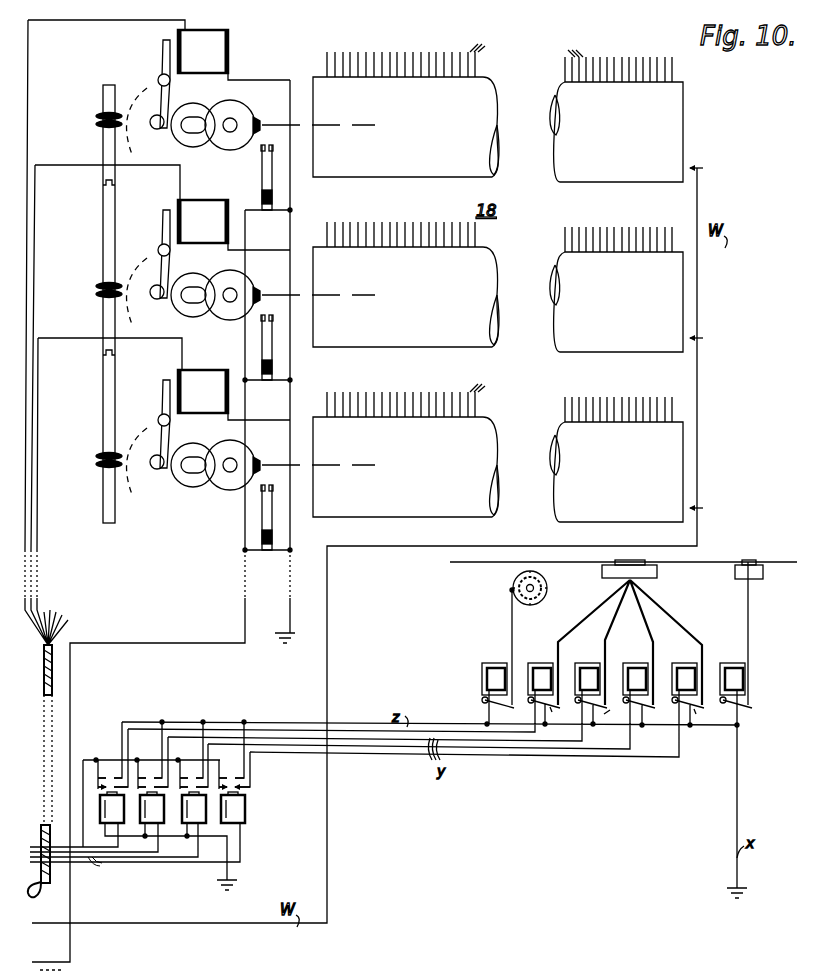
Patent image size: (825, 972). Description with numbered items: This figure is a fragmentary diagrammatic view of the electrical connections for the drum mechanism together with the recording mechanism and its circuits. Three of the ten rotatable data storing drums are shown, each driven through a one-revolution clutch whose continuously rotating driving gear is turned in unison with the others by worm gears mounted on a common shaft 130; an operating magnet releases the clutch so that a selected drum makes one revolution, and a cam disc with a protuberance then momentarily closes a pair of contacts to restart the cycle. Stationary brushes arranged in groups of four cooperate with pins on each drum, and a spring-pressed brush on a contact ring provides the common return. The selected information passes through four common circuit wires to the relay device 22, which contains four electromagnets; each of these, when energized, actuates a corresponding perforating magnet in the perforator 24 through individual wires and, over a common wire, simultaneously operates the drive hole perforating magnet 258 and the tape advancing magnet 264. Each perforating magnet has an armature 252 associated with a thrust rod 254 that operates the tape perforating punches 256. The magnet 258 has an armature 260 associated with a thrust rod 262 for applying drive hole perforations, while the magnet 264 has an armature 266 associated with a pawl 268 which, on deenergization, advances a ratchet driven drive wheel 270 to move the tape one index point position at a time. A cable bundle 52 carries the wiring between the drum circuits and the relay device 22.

The relay device 22 is at (155, 808).
The perforator 24 is at (610, 717).
The cable bundle 52 is at (39, 870).
The shaft 130 is at (104, 208).
The armature 252 is at (632, 715).
The thrust rod 254 is at (600, 632).
The tape perforating punches 256 is at (610, 565).
The drive hole perforating magnet 258 is at (745, 678).
The armature 260 is at (742, 712).
The thrust rod 262 is at (750, 646).
The tape advancing magnet 264 is at (485, 672).
The armature 266 is at (482, 704).
The pawl 268 is at (510, 615).
The ratchet driven drive wheel 270 is at (513, 585).